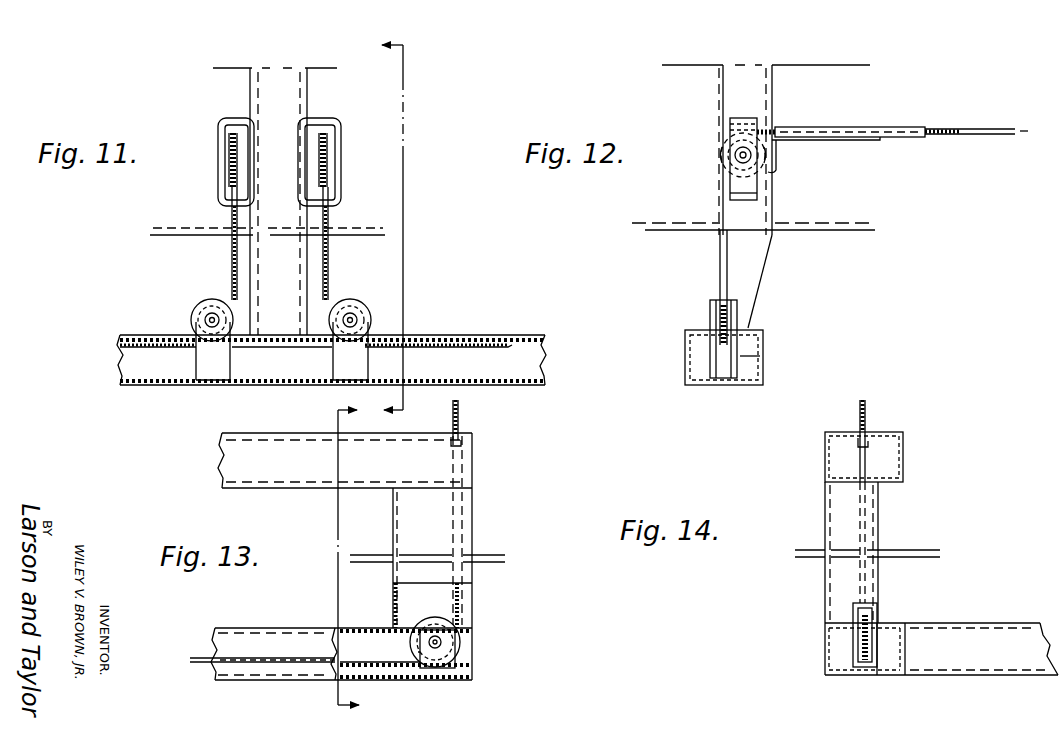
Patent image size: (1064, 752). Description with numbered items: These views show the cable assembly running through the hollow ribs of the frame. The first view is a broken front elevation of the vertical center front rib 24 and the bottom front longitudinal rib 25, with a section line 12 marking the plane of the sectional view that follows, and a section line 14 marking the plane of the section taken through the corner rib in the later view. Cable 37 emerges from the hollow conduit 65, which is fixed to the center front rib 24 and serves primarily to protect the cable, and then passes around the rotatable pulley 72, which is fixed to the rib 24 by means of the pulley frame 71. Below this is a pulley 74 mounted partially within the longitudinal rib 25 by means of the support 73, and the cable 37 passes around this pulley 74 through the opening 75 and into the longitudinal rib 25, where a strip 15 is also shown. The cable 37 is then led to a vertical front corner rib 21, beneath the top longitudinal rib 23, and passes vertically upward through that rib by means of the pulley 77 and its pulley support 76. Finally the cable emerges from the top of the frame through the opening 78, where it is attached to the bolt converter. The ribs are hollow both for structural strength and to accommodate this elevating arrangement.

In FIG. 11, the section line 12— 12 is at (408, 227).
In FIG. 13, the section line 14— 14 is at (330, 559).
In FIG. 11, the channel strip 15 is at (330, 348).
In FIG. 13, the vertical front corner rib 21 is at (463, 521).
In FIG. 14, the vertical front corner rib 21 is at (830, 504).
In FIG. 13, the top longitudinal rib 23 is at (272, 477).
In FIG. 14, the top longitudinal rib 23 is at (883, 464).
In FIG. 11, the vertical center front rib 24 is at (282, 78).
In FIG. 12, the vertical center front rib 24 is at (757, 97).
In FIG. 11, the bottom front longitudinal rib 25 is at (262, 372).
In FIG. 12, the bottom front longitudinal rib 25 is at (688, 385).
In FIG. 13, the bottom front longitudinal rib 25 is at (268, 668).
In FIG. 14, the bottom front longitudinal rib 25 is at (833, 675).
In FIG. 11, the cable 37 is at (232, 272).
In FIG. 12, the cable 37 is at (1000, 128).
In FIG. 13, the cable 37 is at (462, 416).
In FIG. 14, the cable 37 is at (868, 404).
In FIG. 12, the conduit 65 is at (920, 128).
In FIG. 11, the pulley frame 71 is at (232, 120).
In FIG. 12, the pulley frame 71 is at (734, 125).
In FIG. 11, the pulley 72 is at (228, 158).
In FIG. 12, the pulley 72 is at (722, 162).
In FIG. 11, the support 73 is at (208, 366).
In FIG. 12, the support 73 is at (760, 357).
In FIG. 11, the pulley 74 is at (192, 317).
In FIG. 12, the opening 75 is at (735, 300).
In FIG. 13, the pulley support 76 is at (445, 653).
In FIG. 14, the pulley support 76 is at (880, 675).
In FIG. 13, the pulley 77 is at (420, 650).
In FIG. 14, the pulley 77 is at (877, 613).
In FIG. 13, the opening 78 is at (470, 441).
In FIG. 14, the opening 78 is at (876, 437).